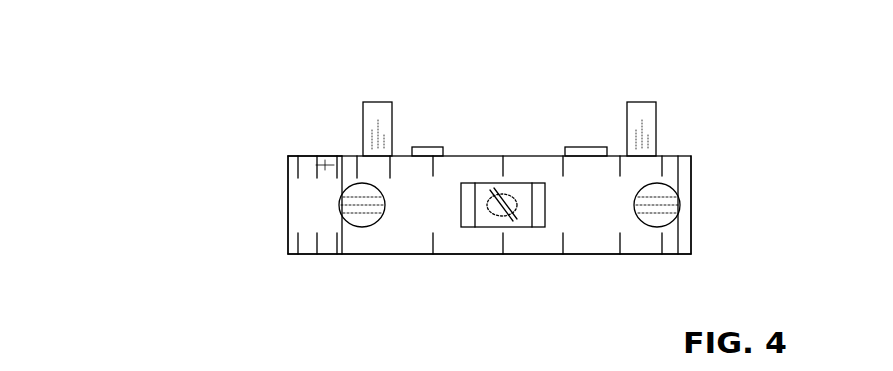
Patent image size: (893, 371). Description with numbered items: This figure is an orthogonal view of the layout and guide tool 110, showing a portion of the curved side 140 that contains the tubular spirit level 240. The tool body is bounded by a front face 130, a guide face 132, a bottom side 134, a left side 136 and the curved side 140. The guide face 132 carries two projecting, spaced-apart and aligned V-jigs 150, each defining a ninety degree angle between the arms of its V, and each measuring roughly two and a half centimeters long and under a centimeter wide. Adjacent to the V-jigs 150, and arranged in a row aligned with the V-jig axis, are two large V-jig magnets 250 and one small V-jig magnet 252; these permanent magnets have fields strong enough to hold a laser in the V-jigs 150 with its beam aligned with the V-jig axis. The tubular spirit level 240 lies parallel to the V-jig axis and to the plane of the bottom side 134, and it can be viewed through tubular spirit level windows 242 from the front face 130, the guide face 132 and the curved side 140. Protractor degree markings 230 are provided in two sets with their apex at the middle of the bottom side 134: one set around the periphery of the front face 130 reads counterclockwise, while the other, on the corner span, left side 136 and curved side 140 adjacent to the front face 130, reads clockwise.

The layout and guide tool 110 is at (140, 62).
The front face 130 is at (295, 147).
The guide face 132 is at (350, 270).
The bottom side 134 is at (190, 263).
The left side 136 is at (695, 183).
The curved side 140 is at (567, 206).
The V-jig 150 is at (355, 112).
The protractor degree markings 230 is at (420, 173).
The tubular spirit level 240 is at (513, 195).
The tubular spirit level window 242 is at (492, 192).
The large V-jig magnet 250 is at (427, 147).
The small V-jig magnet 252 is at (320, 156).